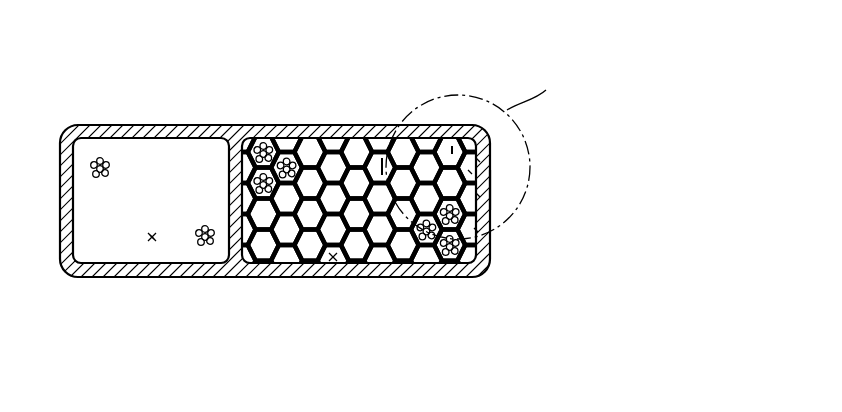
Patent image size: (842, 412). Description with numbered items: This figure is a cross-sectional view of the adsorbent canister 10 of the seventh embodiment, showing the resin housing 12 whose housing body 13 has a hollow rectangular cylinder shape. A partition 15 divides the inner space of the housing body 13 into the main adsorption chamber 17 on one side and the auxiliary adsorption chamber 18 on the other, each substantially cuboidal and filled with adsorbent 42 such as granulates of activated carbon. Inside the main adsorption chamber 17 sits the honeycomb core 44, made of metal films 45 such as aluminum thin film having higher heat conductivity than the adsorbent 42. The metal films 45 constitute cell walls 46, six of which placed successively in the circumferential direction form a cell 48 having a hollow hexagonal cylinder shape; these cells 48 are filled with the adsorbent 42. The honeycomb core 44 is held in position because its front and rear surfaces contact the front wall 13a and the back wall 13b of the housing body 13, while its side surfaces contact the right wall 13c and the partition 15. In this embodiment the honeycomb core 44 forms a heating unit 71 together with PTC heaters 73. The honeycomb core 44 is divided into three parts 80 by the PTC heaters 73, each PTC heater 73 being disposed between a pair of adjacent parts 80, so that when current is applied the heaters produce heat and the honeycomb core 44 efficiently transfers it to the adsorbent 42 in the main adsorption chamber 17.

The adsorbent canister 10 is at (325, 74).
The housing 12 is at (262, 95).
The housing body 13 is at (203, 114).
The front wall 13a is at (370, 130).
The back wall 13b is at (302, 270).
The right wall 13c is at (480, 187).
The partition 15 is at (233, 168).
The main adsorption chamber 17 is at (333, 262).
The auxiliary adsorption chamber 18 is at (152, 240).
The adsorbent 42 is at (108, 150).
The honeycomb core 44 is at (382, 258).
The metal film 45 is at (364, 202).
The cell wall 46 is at (334, 135).
The cell 48 is at (457, 145).
The heating unit 71 is at (384, 155).
The PTC heater 73 is at (470, 172).
The part 80 is at (478, 162).